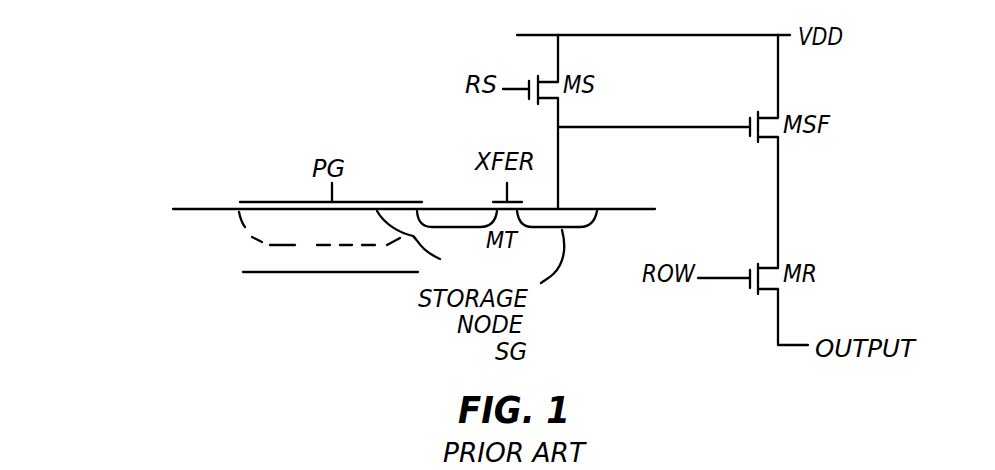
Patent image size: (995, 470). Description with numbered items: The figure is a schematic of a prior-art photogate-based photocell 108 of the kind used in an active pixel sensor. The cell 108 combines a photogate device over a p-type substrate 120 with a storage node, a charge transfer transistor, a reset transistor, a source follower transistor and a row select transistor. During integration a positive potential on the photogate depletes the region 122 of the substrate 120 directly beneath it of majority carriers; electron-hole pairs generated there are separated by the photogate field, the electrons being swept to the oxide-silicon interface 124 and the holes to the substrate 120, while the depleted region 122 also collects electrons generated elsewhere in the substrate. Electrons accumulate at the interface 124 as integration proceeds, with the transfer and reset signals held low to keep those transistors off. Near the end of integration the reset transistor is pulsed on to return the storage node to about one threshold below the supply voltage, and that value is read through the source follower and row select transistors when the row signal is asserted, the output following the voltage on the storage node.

The photogate-based photocell 108 is at (275, 105).
The p-type substrate 120 is at (232, 259).
The carrier-depleted region 122 is at (320, 240).
The oxide-silicon interface 124 is at (430, 246).